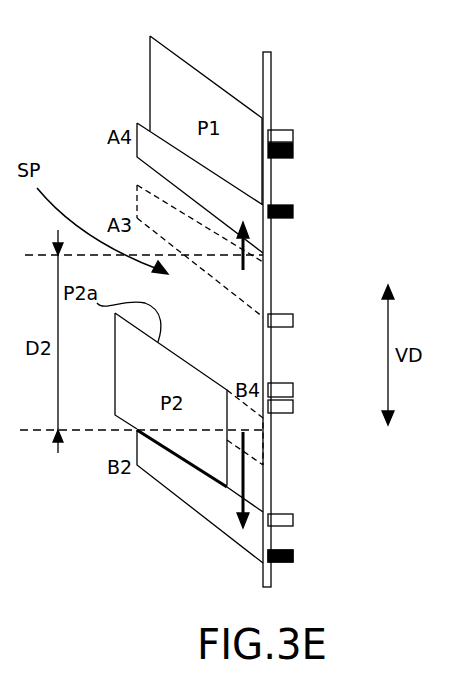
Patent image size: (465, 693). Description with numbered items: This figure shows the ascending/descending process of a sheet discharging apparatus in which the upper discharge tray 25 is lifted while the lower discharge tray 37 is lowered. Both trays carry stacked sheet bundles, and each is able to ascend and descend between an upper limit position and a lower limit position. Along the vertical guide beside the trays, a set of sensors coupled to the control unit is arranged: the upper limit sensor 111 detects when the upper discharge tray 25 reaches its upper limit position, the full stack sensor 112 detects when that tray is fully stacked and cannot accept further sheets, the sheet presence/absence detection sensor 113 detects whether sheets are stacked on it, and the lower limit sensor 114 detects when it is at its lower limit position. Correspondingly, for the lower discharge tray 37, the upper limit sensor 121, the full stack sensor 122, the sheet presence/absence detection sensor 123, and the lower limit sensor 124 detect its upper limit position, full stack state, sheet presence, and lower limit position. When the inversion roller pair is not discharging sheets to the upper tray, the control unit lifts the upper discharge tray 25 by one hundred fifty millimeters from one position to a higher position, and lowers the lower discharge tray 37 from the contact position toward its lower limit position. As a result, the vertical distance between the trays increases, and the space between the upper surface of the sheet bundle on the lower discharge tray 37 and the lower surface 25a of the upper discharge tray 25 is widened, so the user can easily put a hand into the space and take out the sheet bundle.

The upper limit sensor 111 is at (294, 136).
The full stack sensor 112 is at (294, 151).
The sheet presence/absence detection sensor 113 is at (294, 212).
The lower limit sensor 114 is at (294, 321).
The upper limit sensor 121 is at (294, 390).
The full stack sensor 122 is at (294, 407).
The sheet presence/absence detection sensor 123 is at (294, 520).
The lower limit sensor 124 is at (294, 556).
The upper discharge tray 25 is at (137, 207).
The lower surface 25a is at (213, 277).
The lower discharge tray 37 is at (137, 450).